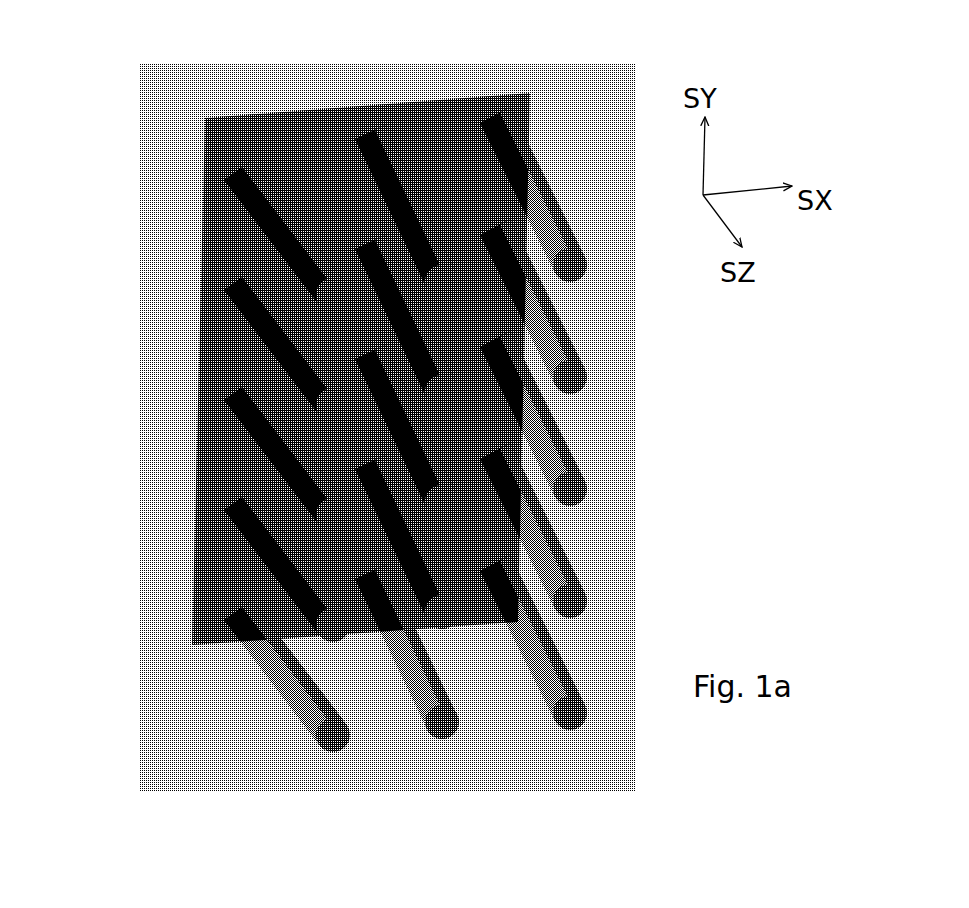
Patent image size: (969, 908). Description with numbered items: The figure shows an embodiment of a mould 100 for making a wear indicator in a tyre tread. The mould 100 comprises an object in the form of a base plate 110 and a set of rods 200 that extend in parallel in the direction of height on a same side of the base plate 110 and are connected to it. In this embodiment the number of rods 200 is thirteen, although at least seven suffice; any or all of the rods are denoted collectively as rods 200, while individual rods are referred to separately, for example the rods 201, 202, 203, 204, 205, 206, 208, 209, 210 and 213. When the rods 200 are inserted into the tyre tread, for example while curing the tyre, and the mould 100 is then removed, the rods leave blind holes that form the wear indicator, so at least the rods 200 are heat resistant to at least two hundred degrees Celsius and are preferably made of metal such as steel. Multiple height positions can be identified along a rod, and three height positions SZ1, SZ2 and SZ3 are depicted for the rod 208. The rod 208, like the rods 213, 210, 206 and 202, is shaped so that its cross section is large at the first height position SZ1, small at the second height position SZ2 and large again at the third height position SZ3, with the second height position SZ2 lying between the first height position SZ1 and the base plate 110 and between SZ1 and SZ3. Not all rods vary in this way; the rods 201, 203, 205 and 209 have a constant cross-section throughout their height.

The mould 100 is at (162, 95).
The base plate 110 is at (302, 115).
The rods 200 is at (402, 307).
The rod 201 is at (230, 178).
The rod 202 is at (232, 280).
The rod 203 is at (230, 390).
The rod 204 is at (228, 500).
The rod 205 is at (268, 680).
The rod 206 is at (395, 163).
The rod 208 is at (462, 740).
The rod 209 is at (513, 147).
The rod 210 is at (552, 368).
The rod 213 is at (582, 718).
The first height position SZ1 is at (402, 713).
The second height position SZ2 is at (372, 700).
The third height position SZ3 is at (222, 605).